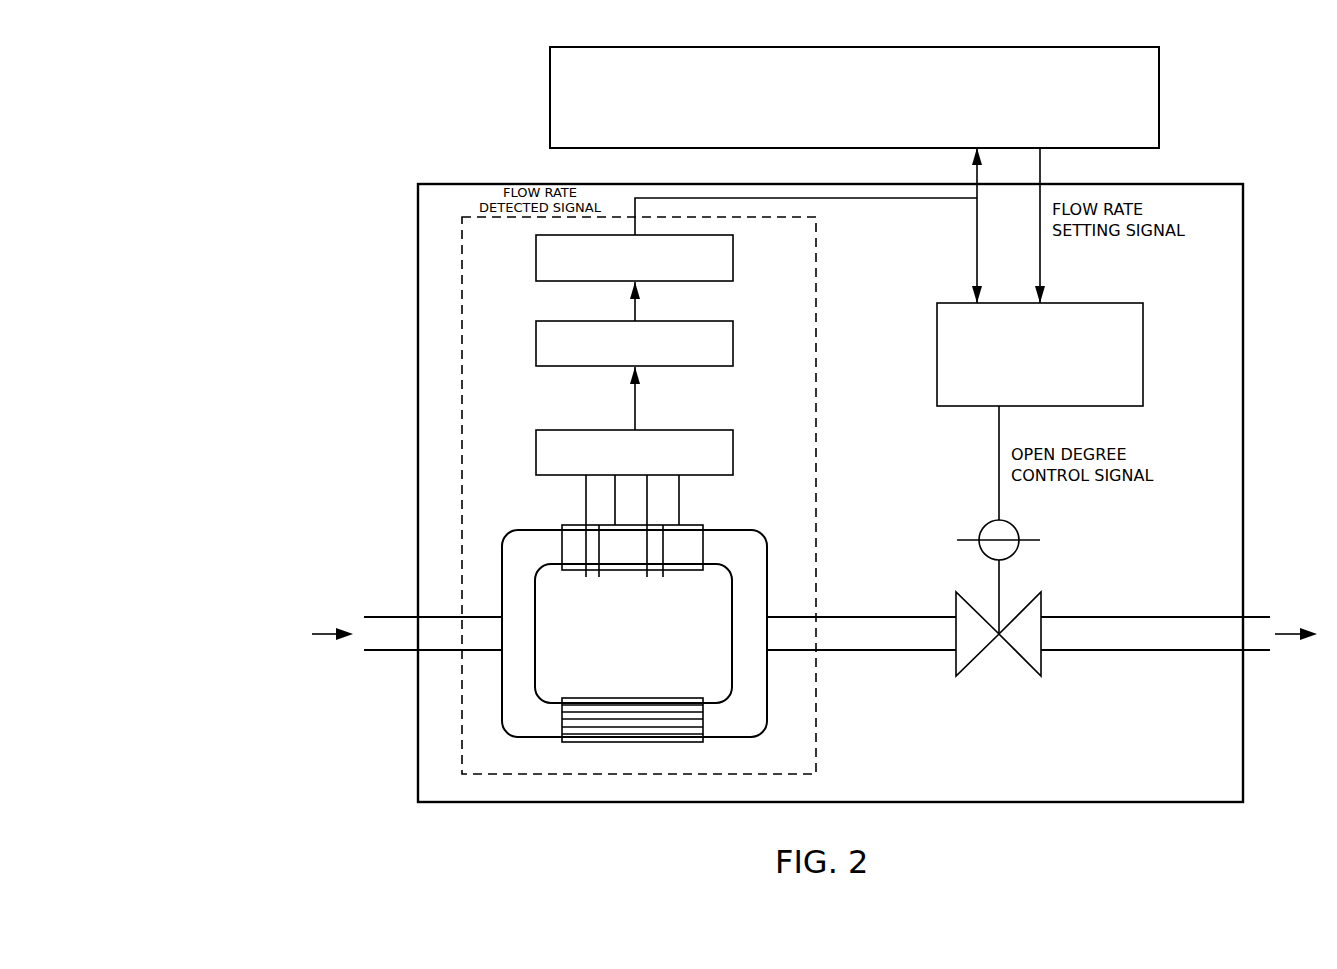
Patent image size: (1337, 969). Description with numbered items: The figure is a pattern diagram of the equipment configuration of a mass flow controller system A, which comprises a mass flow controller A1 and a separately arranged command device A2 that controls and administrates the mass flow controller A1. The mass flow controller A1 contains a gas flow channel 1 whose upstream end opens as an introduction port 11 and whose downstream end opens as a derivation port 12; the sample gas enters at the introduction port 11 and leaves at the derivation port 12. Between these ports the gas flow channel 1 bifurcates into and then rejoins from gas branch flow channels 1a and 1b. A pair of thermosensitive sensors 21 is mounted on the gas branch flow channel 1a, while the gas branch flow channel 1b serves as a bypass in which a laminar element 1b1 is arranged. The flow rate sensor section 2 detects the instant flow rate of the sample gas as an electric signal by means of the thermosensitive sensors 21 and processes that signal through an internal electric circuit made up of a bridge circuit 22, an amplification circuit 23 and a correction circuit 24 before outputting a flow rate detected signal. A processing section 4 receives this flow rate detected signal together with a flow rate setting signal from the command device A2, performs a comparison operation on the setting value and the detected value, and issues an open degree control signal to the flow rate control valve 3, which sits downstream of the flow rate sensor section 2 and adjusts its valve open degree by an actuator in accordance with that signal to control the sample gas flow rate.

The mass flow controller system A is at (440, 90).
The mass flow controller A1 is at (449, 173).
The command device A2 is at (540, 103).
The gas flow channel 1 is at (871, 606).
The gas branch flow channel 1a is at (542, 528).
The gas branch flow channel 1b is at (558, 698).
The laminar element 1b1 is at (630, 742).
The flow rate sensor section 2 is at (852, 489).
The thermosensitive sensor 21 is at (596, 587).
The bridge circuit 22 is at (735, 452).
The amplification circuit 23 is at (735, 343).
The correction circuit 24 is at (735, 258).
The flow rate control valve 3 is at (1004, 695).
The processing section 4 is at (926, 330).
The introduction port 11 is at (383, 606).
The derivation port 12 is at (1263, 606).